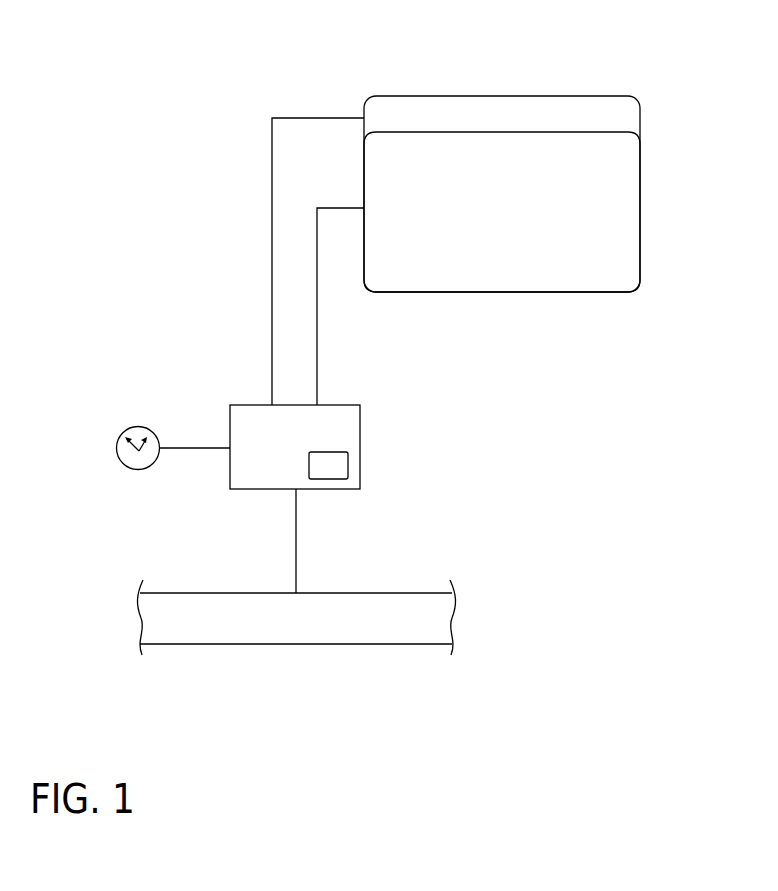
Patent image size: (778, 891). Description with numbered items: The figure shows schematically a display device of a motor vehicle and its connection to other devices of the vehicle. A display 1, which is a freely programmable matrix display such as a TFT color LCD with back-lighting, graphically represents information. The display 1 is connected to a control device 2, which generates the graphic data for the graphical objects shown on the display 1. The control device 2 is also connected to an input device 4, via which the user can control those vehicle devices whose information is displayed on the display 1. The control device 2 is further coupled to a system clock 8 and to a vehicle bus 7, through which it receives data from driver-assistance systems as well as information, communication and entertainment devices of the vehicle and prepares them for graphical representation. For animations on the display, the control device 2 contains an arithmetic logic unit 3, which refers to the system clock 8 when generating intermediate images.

The display 1 is at (627, 188).
The control device 2 is at (351, 423).
The arithmetic logic unit 3 is at (338, 465).
The input device 4 is at (538, 107).
The vehicle bus 7 is at (351, 624).
The system clock 8 is at (121, 448).